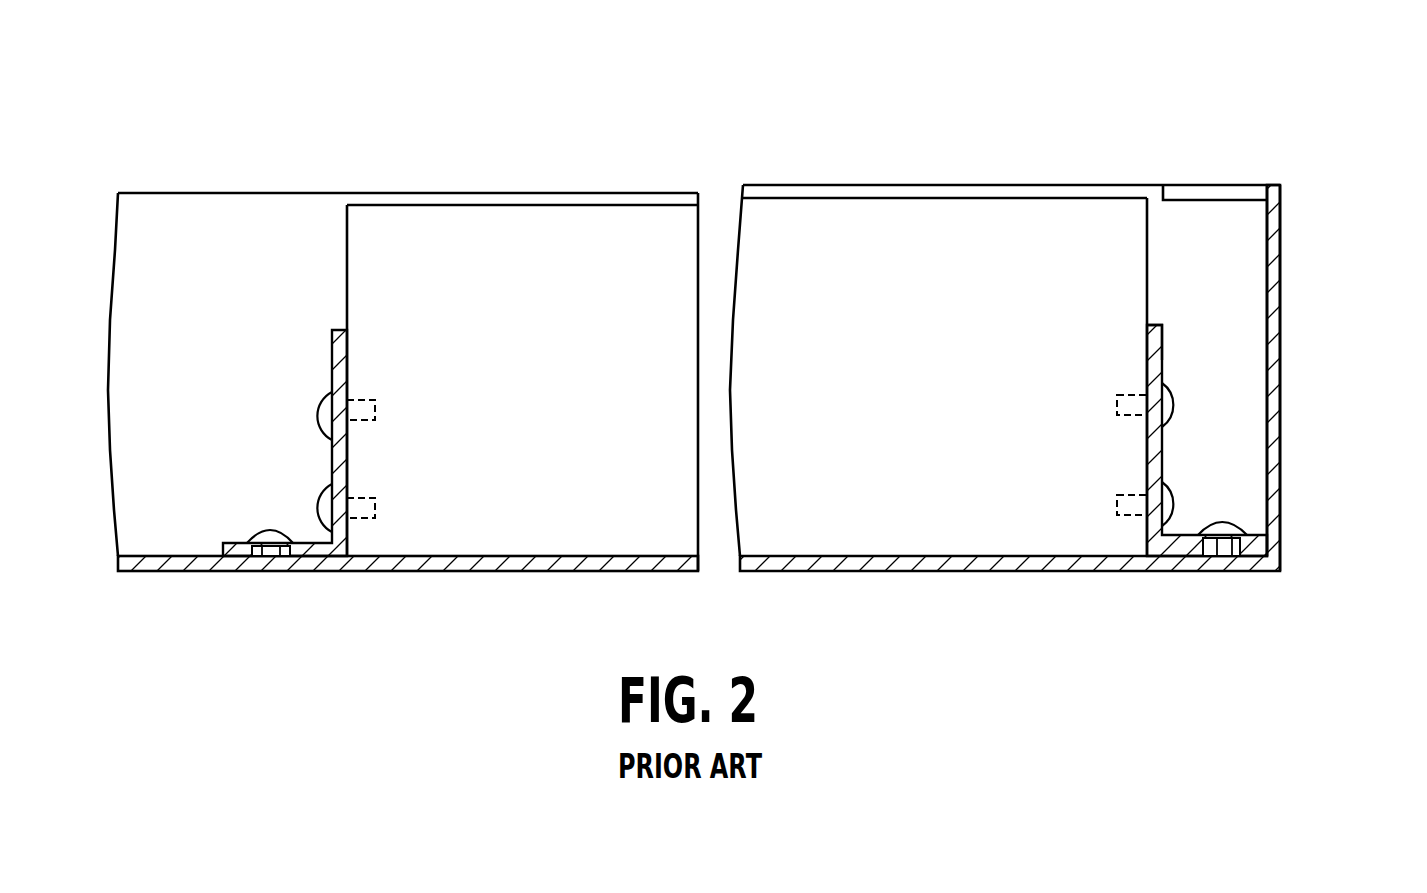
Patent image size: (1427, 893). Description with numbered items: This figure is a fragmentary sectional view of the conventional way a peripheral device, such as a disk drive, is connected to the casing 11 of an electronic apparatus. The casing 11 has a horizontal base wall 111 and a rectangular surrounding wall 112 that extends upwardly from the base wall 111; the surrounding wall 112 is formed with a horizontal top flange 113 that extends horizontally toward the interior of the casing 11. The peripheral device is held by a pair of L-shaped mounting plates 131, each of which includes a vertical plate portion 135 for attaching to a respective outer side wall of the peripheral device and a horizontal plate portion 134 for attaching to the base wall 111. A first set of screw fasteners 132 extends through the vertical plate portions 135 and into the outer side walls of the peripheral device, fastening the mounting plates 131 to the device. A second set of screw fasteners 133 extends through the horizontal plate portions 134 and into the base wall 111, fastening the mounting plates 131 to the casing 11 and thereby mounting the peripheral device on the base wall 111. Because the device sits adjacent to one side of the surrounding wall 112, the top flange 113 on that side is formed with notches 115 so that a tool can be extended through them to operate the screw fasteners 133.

The casing 11 is at (1283, 475).
The horizontal base wall 111 is at (925, 562).
The rectangular surrounding wall 112 is at (1273, 392).
The horizontal top flange 113 is at (1203, 200).
The notches 115 is at (1218, 193).
The L-shaped mounting plate 131 is at (333, 352).
The first set of screw fasteners 132 is at (1165, 408).
The second set of screw fasteners 133 is at (1207, 533).
The horizontal plate portion 134 is at (1240, 547).
The vertical plate portion 135 is at (1152, 347).